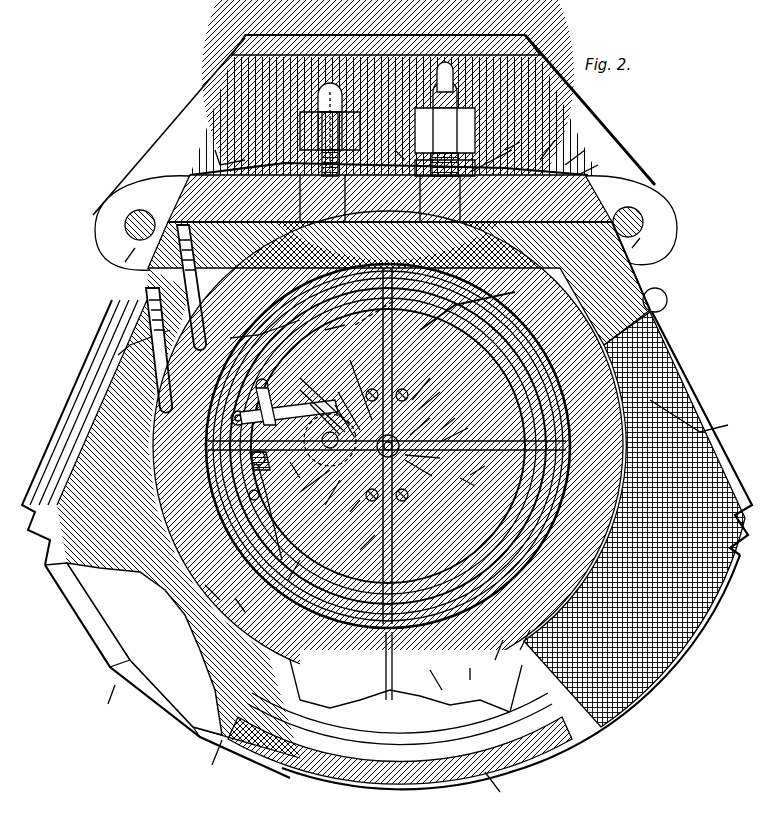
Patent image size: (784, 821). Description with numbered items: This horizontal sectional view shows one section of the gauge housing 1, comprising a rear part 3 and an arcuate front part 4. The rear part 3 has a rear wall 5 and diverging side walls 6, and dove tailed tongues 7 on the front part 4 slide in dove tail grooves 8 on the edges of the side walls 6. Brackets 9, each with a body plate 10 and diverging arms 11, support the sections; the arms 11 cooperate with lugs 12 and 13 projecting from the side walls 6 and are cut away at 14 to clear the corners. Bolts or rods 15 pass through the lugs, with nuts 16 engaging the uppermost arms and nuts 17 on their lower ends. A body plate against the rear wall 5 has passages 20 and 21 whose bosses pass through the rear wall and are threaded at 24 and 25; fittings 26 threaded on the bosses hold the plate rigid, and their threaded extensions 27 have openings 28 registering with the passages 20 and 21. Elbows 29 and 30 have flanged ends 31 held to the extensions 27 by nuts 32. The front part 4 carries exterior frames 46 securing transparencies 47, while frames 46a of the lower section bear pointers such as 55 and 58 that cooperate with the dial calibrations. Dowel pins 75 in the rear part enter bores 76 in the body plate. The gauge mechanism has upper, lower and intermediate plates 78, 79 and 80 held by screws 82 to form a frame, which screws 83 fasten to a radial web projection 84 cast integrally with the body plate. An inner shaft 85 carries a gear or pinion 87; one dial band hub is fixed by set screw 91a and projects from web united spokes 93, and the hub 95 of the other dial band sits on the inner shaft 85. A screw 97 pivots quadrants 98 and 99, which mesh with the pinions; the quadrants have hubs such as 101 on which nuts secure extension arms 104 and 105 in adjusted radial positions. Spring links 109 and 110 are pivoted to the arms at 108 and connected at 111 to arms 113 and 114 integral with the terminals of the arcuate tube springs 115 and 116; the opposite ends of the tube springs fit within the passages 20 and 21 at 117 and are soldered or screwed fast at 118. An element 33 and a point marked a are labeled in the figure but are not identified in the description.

The gauge housing 1 is at (690, 390).
The rear part 3 is at (552, 143).
The front part 4 is at (688, 660).
The rear wall 5 is at (525, 200).
The diverging side walls 6 is at (400, 312).
The dove tailed tongues 7 is at (30, 515).
The dove tail grooves 8 is at (45, 500).
The brackets 9 is at (497, 50).
The body plate 10 is at (450, 48).
The diverging arms 11 is at (195, 108).
The lug 12 is at (504, 644).
The lug 13 is at (100, 228).
The cut away portion 14 is at (395, 145).
The elongated bolts or rods 15 is at (150, 202).
The nuts 16 is at (530, 634).
The nuts 17 is at (595, 162).
The passage 20 is at (470, 252).
The passage 21 is at (392, 300).
The threaded portion of boss 24 is at (476, 168).
The threaded portion of boss 25 is at (300, 140).
The fittings 26 is at (443, 156).
The threaded extensions 27 is at (650, 290).
The openings 28 is at (345, 108).
The elbow 29 is at (345, 118).
The elbow 30 is at (318, 90).
The flanged ends 31 is at (310, 128).
The nuts 32 is at (345, 100).
The thread 33 is at (432, 165).
The exterior frames 46 is at (497, 792).
The frames 46a is at (206, 757).
The transparencies 47 is at (438, 685).
The pointer 55 is at (398, 780).
The pointer 58 is at (103, 700).
The dowel pins 75 is at (150, 360).
The bores 76 is at (265, 333).
The upper plate 78 is at (349, 507).
The lower plate 79 is at (427, 385).
The intermediate plate 80 is at (412, 410).
The screws 82 is at (372, 390).
The screws 83 is at (405, 390).
The radial web projection 84 is at (341, 403).
The inner shaft 85 is at (460, 430).
The gear or pinion 87 is at (363, 547).
The set screw 91a is at (434, 457).
The web united spokes 93 is at (484, 460).
The hub 95 is at (383, 437).
The screw 97 is at (318, 412).
The quadrant 98 is at (311, 483).
The quadrant 99 is at (358, 381).
The hub 101 is at (292, 574).
The extension arm 104 is at (315, 403).
The extension arm 105 is at (305, 472).
The pivotal connection 108 is at (262, 378).
The spring link 109 is at (321, 393).
The spring link 110 is at (283, 406).
The pivotal connection 111 is at (255, 505).
The arm 113 is at (325, 495).
The arm 114 is at (219, 595).
The tube spring 115 is at (475, 579).
The tube spring 116 is at (480, 585).
The fitting location 117 is at (407, 335).
The fastening 118 is at (413, 499).
The point a is at (469, 584).